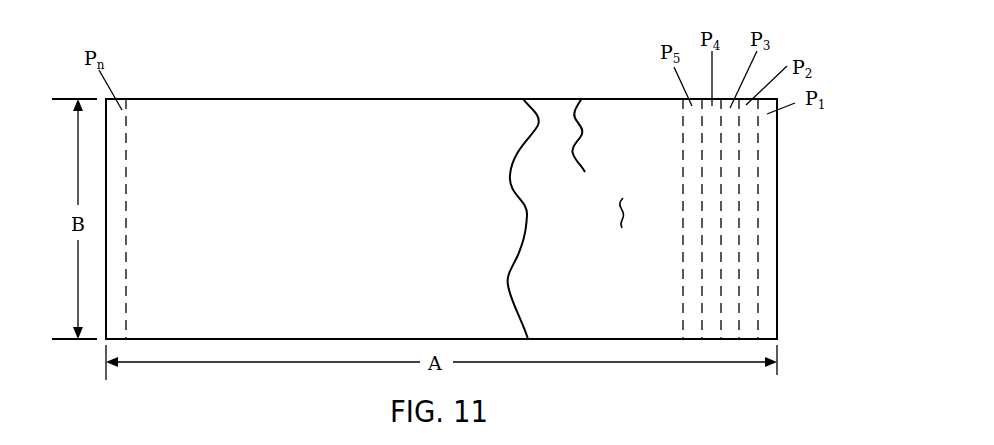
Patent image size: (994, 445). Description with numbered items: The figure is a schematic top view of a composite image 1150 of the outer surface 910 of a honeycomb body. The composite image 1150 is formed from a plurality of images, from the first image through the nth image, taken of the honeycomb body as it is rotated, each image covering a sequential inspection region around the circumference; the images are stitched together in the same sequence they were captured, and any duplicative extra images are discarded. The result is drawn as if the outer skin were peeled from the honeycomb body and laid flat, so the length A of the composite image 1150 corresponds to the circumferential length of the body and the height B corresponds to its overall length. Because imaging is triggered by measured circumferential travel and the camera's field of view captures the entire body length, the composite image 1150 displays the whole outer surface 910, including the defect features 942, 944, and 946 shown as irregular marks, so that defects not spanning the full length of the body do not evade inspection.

The composite image 1150 is at (500, 77).
The outer surface 910 is at (441, 219).
The crack 942 is at (510, 190).
The crack 944 is at (588, 138).
The crack 946 is at (626, 218).